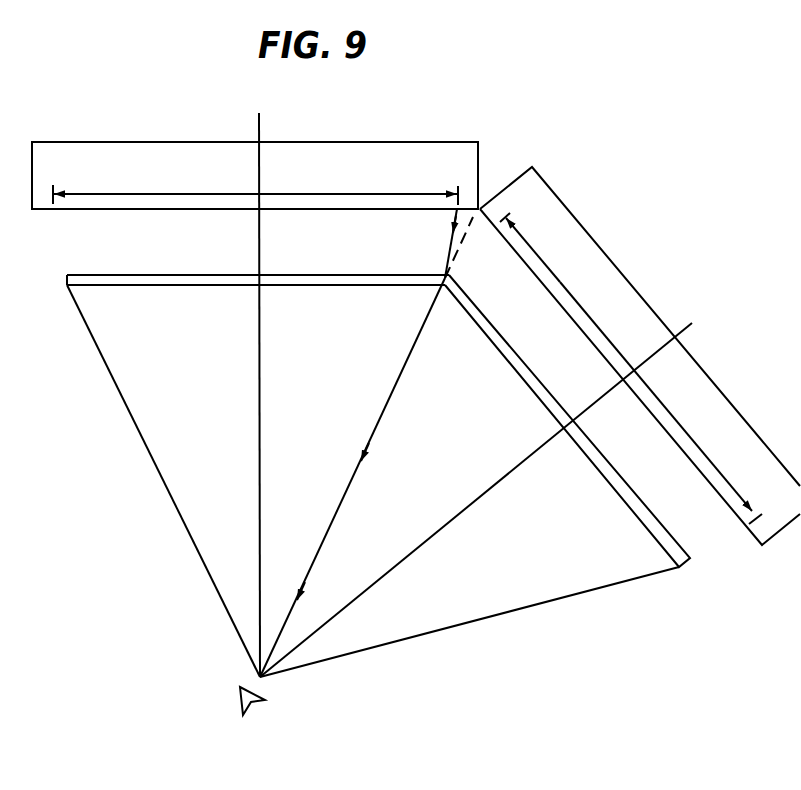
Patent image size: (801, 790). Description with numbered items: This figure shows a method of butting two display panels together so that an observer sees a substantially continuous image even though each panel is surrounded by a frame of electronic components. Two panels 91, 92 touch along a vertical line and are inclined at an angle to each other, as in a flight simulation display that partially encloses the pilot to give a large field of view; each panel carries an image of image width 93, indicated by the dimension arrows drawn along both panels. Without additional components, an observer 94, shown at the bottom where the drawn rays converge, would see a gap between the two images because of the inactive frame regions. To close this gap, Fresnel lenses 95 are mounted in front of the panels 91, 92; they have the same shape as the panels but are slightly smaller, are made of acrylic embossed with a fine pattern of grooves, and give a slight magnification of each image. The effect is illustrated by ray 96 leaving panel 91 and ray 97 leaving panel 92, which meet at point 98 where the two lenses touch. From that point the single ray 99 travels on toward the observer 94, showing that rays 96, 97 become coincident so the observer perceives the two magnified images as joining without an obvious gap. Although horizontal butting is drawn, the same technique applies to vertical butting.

The panel 91 is at (479, 147).
The panel 92 is at (554, 191).
The image width 93 is at (392, 191).
The observer 94 is at (259, 706).
The Fresnel lenses 95 is at (466, 320).
The ray 96 is at (451, 221).
The ray 97 is at (477, 245).
The meeting point 98 is at (441, 269).
The ray 99 is at (403, 377).